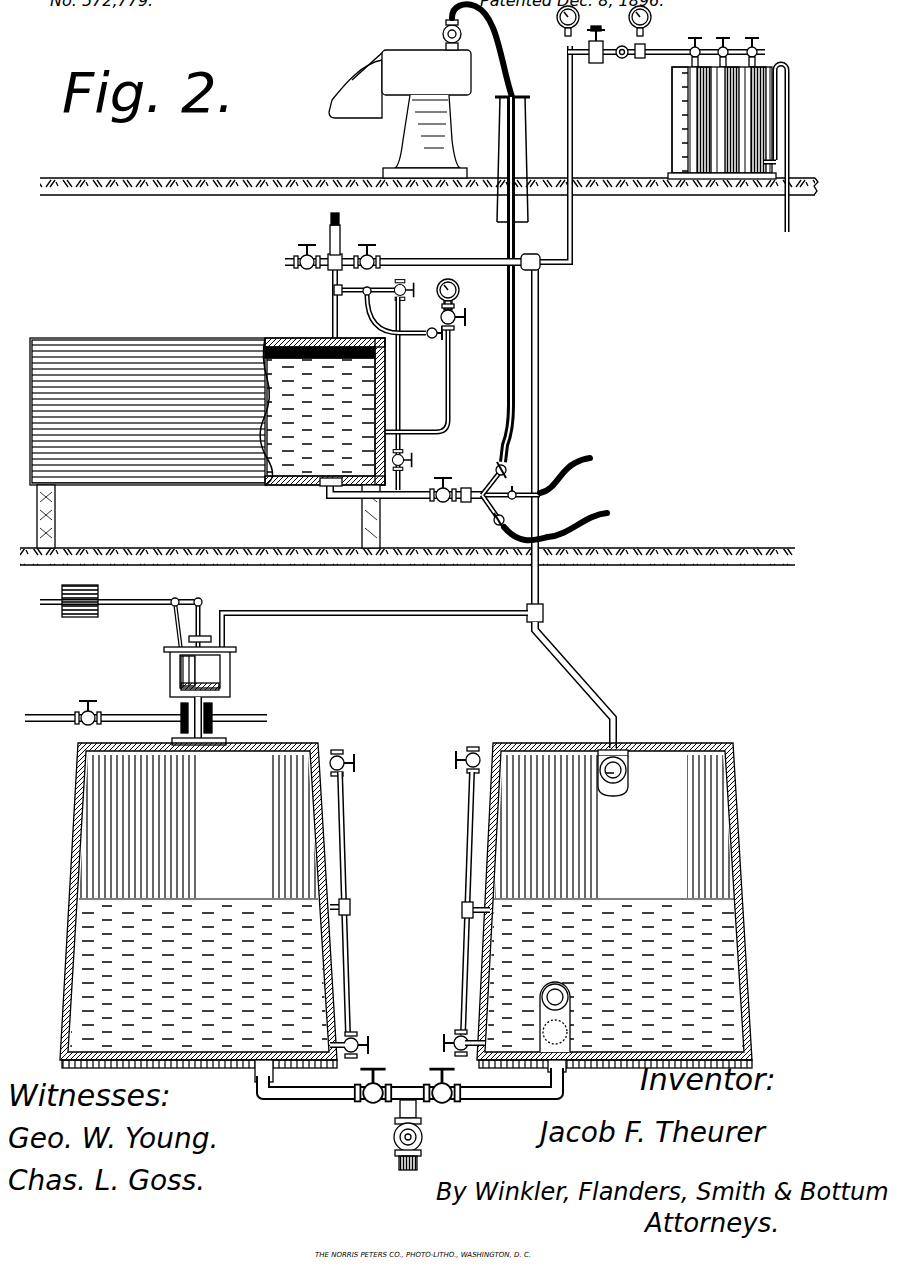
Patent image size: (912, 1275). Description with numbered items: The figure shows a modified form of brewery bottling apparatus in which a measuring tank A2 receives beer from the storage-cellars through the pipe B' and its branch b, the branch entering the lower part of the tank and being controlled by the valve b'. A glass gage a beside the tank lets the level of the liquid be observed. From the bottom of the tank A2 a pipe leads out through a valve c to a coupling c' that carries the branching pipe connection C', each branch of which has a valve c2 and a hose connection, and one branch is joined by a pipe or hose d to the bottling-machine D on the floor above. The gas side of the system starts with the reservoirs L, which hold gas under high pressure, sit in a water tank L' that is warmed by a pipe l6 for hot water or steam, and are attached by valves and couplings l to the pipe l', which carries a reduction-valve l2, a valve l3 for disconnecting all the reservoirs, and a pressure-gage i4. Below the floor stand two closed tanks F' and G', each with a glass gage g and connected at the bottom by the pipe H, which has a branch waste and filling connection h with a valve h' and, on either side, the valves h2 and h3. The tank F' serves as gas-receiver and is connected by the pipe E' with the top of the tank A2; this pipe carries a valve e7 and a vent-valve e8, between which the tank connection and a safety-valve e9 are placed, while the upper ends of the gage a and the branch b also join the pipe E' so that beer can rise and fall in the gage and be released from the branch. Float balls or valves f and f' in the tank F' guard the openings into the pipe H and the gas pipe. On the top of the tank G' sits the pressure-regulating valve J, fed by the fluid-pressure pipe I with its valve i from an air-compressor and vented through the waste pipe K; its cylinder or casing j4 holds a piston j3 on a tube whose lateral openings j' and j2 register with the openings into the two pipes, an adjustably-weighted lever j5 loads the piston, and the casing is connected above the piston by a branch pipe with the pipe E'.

The bottling-machine D is at (403, 50).
The pressure gauge i4 is at (652, 22).
The valve and coupling l is at (724, 35).
The reduction-valve l2 is at (598, 64).
The valve l3 is at (622, 60).
The reservoir L is at (721, 123).
The tank L' is at (652, 143).
The pipe l' is at (581, 149).
The pipe l6 is at (788, 150).
The vent-valve e8 is at (306, 243).
The safety-valve e9 is at (330, 232).
The valve e7 is at (374, 245).
The pipe B' is at (464, 293).
The valve b' is at (469, 317).
The tank A2 is at (207, 443).
The glass gage a is at (402, 390).
The branch pipe b is at (395, 377).
The pipe or hose d is at (518, 355).
The pipe E' is at (570, 503).
The valve c is at (443, 475).
The branching pipe connection C' is at (420, 492).
The valve c2 is at (503, 462).
The coupling c' is at (458, 513).
The adjustably-weighted lever j5 is at (132, 606).
The cylinder or casing j4 is at (172, 672).
The pressure-regulating valve J is at (215, 735).
The piston j3 is at (222, 683).
The lateral opening j' is at (177, 715).
The lateral opening j2 is at (214, 712).
The pipe I is at (42, 710).
The valve i is at (88, 702).
The vent or waste pipe K is at (262, 714).
The tank G' is at (198, 905).
The tank F' is at (614, 905).
The float ball or valve f' is at (628, 773).
The glass gage g is at (344, 848).
The float ball or valve f is at (569, 1016).
The valve h2 is at (377, 1068).
The valve h3 is at (440, 1068).
The pipe H is at (332, 1108).
The valve h' is at (392, 1144).
The branch waste and filling connection h is at (425, 1121).